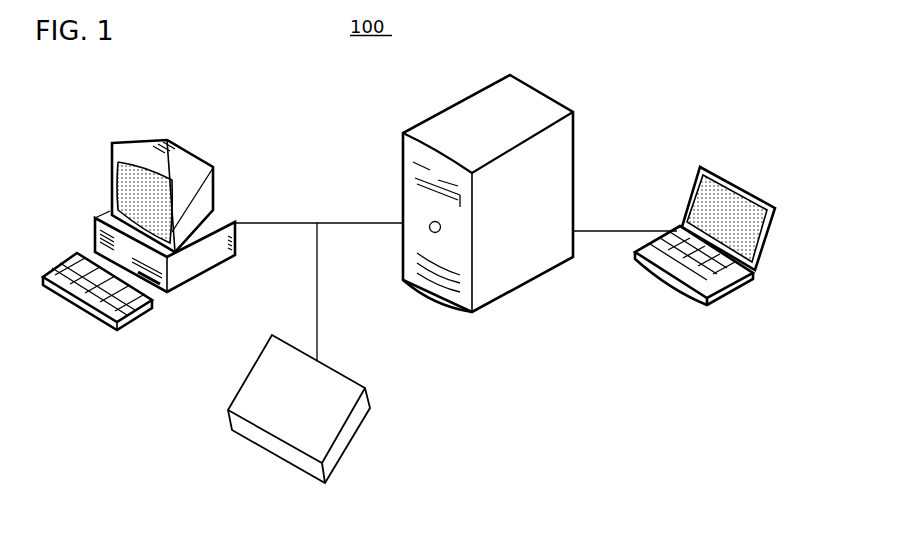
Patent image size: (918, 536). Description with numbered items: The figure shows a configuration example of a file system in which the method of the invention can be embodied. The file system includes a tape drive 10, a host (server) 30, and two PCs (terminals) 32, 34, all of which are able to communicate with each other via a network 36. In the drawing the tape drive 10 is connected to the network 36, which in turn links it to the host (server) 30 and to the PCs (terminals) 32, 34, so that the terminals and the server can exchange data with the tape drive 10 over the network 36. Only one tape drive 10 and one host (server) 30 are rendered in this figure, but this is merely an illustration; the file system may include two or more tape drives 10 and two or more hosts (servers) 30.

The tape drive 10 is at (315, 405).
The host (server) 30 is at (558, 102).
The PC (terminal) 32 is at (185, 152).
The PC (terminal) 34 is at (738, 185).
The network 36 is at (318, 308).